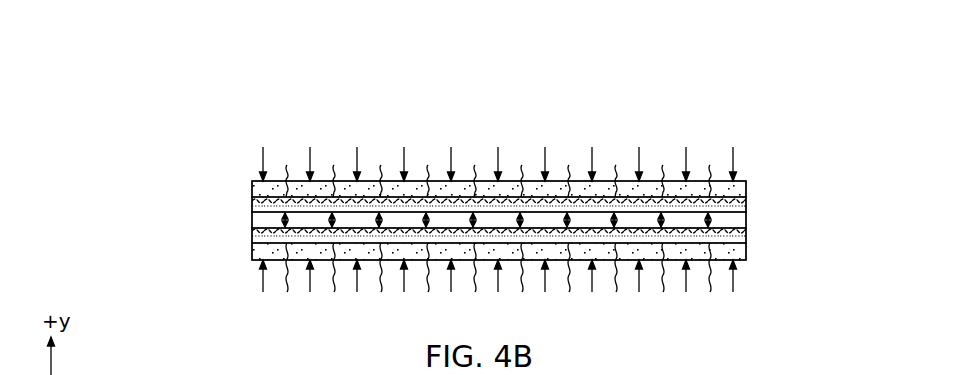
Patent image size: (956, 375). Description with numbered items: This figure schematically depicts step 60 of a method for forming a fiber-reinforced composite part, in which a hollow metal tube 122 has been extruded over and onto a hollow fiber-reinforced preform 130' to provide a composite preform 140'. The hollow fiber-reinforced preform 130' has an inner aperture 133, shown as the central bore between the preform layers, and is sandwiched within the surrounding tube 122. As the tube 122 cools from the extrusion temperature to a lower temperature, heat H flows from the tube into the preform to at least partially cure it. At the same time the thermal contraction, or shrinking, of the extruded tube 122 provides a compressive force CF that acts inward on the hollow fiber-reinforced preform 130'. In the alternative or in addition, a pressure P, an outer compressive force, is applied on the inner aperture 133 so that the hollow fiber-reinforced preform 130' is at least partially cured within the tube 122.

The step 60 is at (747, 103).
The tube 122 is at (746, 188).
The inner aperture 133 is at (256, 220).
The hollow fiber-reinforced preform 130' is at (443, 249).
The composite preform 140' is at (498, 116).
The pressure P is at (712, 220).
The compressive force CF is at (260, 161).
The heat H is at (287, 165).